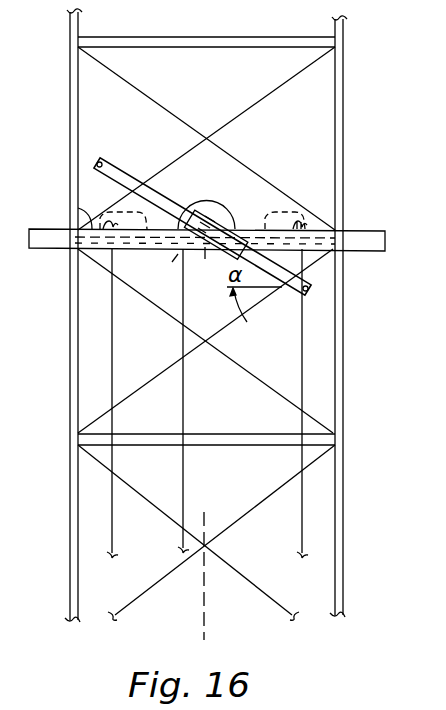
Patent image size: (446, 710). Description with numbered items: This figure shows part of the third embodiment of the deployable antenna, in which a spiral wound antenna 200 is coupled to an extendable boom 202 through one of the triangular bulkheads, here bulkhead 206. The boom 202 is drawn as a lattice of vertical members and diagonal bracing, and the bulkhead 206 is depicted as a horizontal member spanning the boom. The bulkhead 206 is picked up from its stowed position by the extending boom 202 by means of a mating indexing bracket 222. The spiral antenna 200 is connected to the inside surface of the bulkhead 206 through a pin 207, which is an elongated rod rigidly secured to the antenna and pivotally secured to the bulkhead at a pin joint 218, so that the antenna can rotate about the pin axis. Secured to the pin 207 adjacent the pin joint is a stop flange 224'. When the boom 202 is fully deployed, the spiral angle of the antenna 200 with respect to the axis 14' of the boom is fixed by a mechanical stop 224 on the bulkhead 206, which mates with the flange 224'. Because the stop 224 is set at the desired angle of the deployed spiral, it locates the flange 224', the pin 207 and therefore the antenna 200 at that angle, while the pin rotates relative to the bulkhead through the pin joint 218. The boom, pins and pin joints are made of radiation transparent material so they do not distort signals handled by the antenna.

The spiral wound antenna 200 is at (113, 170).
The boom 202 is at (72, 144).
The bulkhead 206 is at (378, 231).
The pin 207 is at (206, 268).
The pin joint 218 is at (166, 285).
The indexing bracket 222 is at (72, 208).
The mechanical stop 224 is at (213, 209).
The stop flange 224' is at (153, 268).
The axis of the boom 14' is at (224, 576).